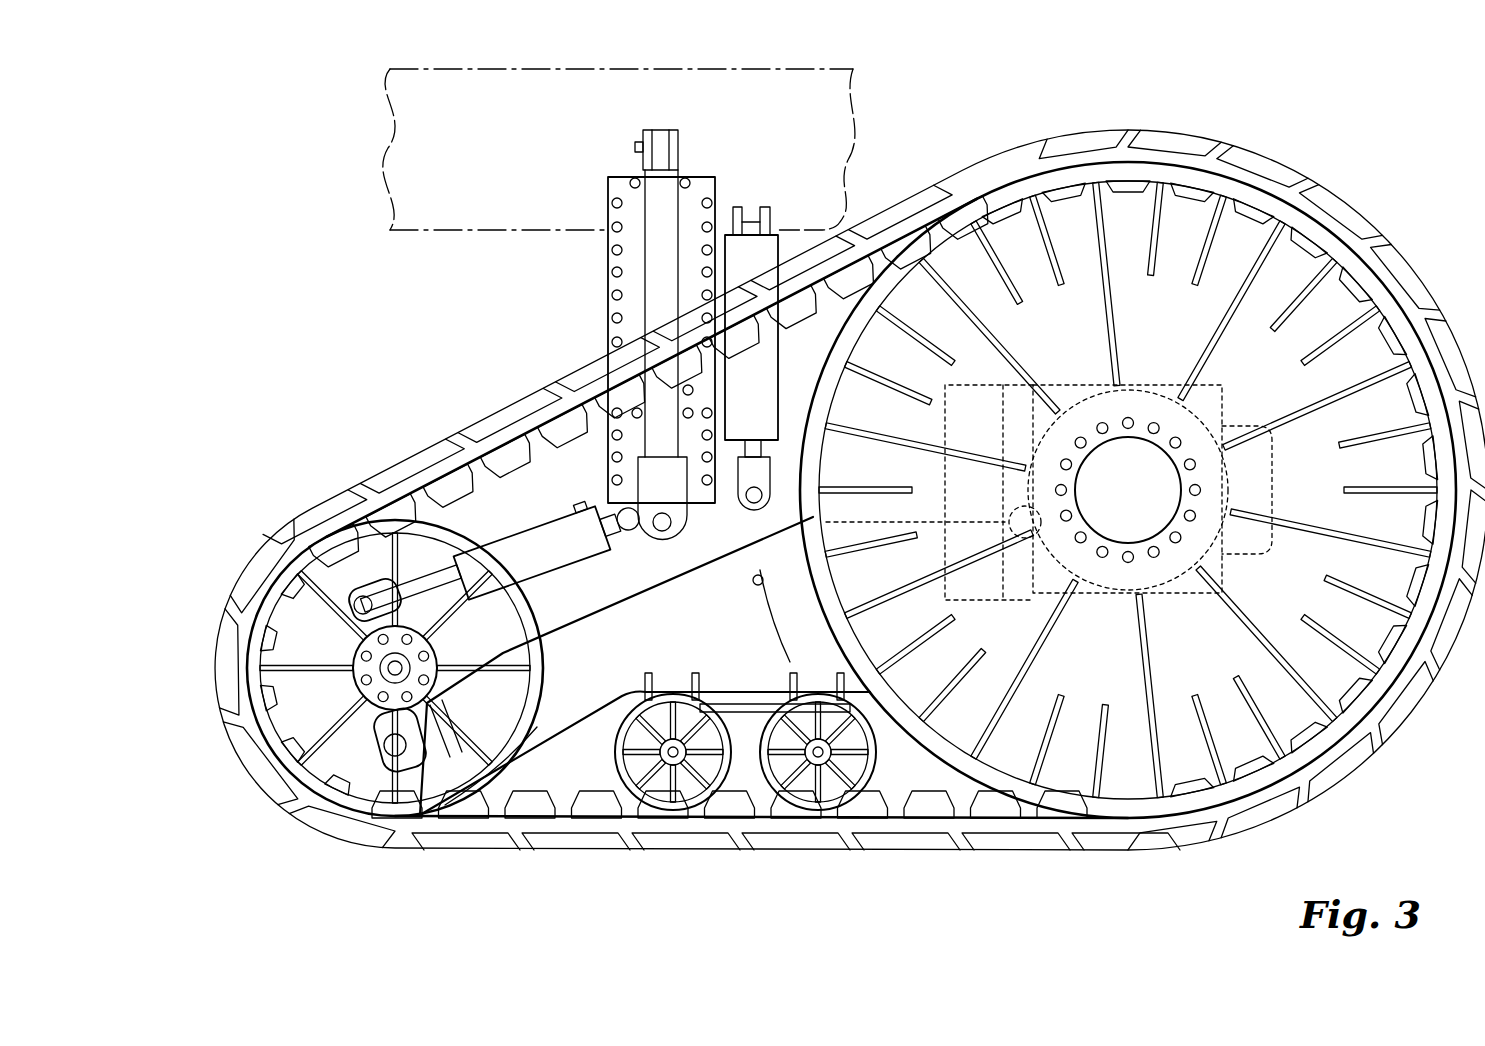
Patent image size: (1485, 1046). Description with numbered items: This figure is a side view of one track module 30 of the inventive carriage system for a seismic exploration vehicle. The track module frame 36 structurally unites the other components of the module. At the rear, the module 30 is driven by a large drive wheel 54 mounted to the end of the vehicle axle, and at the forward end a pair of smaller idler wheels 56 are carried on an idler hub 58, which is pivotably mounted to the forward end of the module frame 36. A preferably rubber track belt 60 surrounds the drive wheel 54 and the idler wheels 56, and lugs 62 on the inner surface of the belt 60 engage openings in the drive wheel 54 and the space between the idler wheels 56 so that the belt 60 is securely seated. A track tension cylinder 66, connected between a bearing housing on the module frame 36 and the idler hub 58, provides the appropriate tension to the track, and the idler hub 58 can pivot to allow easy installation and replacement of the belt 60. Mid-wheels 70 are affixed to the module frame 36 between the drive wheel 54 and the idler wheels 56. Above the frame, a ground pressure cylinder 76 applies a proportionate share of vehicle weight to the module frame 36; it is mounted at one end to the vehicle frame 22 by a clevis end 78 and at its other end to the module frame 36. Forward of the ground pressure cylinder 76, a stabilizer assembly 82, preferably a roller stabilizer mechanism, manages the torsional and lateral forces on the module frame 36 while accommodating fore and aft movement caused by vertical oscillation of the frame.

The vehicle frame 22 is at (790, 90).
The track module 30 is at (1365, 192).
The track module frame 36 is at (602, 675).
The drive wheel 54 is at (1375, 290).
The idler wheels 56 is at (433, 530).
The idler hub 58 is at (352, 655).
The track belt 60 is at (538, 408).
The lugs 62 is at (925, 800).
The track tension cylinder 66 is at (515, 538).
The mid-wheels 70 is at (742, 765).
The ground pressure cylinder 76 is at (757, 258).
The clevis end 78 is at (738, 205).
The stabilizer assembly 82 is at (592, 172).